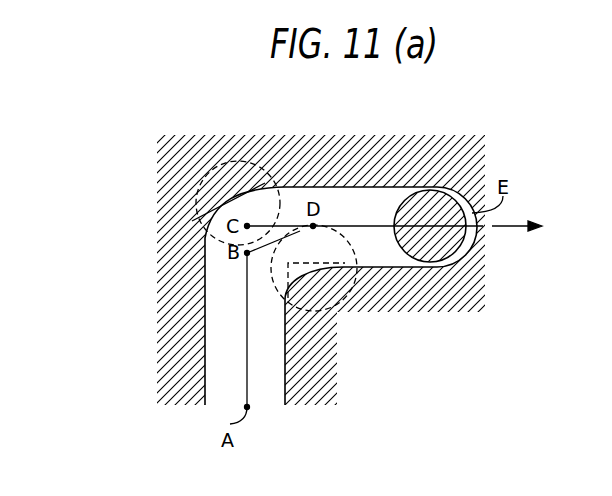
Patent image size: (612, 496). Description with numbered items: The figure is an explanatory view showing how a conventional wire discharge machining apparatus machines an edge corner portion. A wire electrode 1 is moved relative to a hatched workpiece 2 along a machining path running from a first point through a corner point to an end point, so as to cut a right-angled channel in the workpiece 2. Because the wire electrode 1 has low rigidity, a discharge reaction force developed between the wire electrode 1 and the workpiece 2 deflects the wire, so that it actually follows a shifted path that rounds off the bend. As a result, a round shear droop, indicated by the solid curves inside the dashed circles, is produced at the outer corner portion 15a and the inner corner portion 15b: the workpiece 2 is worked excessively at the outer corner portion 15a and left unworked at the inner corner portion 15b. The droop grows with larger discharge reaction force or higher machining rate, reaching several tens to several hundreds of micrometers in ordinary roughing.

The wire electrode 1 is at (476, 240).
The workpiece 2 is at (375, 158).
The outer corner portion 15a is at (334, 311).
The inner corner portion 15b is at (228, 165).